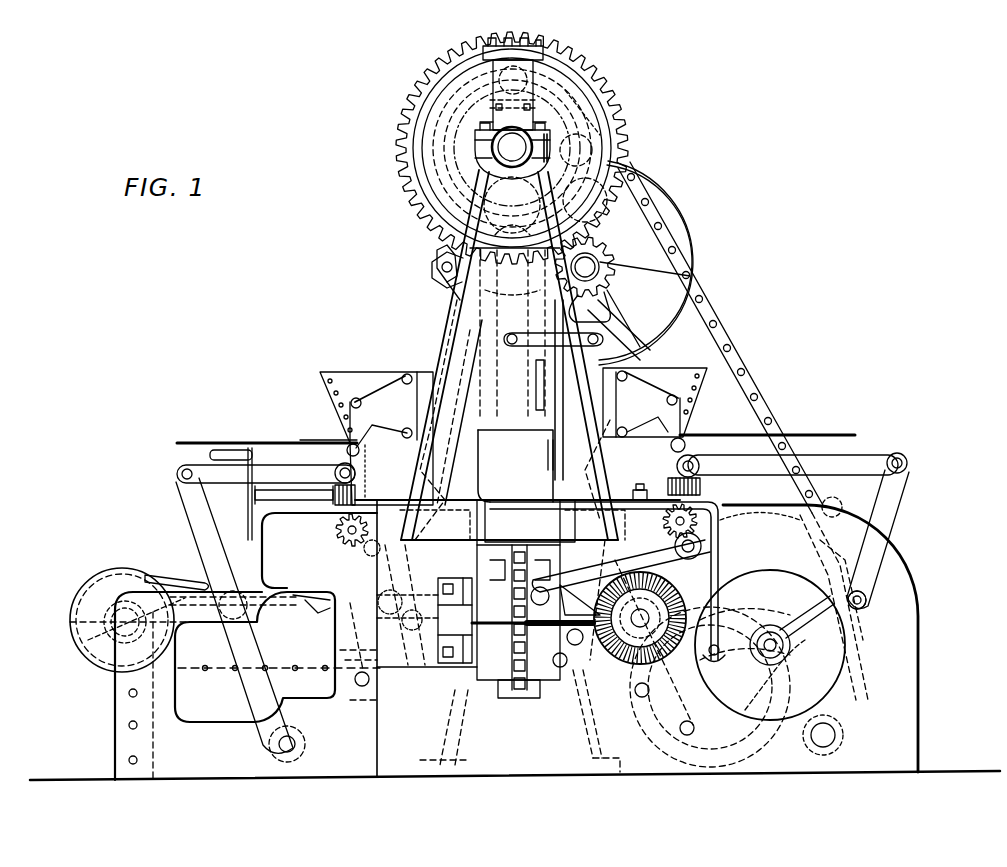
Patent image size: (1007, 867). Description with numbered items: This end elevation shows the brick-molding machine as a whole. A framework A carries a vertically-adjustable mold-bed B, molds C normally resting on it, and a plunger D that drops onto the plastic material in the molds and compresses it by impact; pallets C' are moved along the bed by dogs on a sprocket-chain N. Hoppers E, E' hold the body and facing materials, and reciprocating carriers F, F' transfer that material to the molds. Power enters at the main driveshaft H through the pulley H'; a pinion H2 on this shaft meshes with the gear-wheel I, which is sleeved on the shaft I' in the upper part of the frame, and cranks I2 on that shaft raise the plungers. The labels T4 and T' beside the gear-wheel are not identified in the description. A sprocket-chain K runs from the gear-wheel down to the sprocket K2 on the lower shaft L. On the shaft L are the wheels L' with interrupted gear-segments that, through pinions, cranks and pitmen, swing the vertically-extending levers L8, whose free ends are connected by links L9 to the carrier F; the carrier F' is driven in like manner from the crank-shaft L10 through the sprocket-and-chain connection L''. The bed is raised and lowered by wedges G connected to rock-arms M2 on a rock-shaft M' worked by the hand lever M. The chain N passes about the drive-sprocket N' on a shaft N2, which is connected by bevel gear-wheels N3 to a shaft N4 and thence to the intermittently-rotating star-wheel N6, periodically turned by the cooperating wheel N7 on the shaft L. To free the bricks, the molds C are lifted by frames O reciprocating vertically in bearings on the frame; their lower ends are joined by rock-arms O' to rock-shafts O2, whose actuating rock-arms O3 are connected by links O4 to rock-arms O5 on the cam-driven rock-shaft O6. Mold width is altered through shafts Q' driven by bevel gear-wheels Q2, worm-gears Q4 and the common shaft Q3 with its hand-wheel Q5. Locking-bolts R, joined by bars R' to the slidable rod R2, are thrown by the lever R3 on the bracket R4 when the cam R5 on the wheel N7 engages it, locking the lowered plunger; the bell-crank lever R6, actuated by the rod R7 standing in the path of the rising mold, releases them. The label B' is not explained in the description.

The gear-wheel I is at (513, 148).
The crank-shaft I' is at (474, 124).
The cranks I2 is at (534, 52).
The pinion T4 is at (596, 110).
The pinion T' is at (614, 156).
The main driveshaft H is at (644, 274).
The pulley H' is at (655, 259).
The pinion H2 is at (618, 245).
The framework A is at (455, 258).
The locking-bolts R is at (458, 304).
The bars R' is at (583, 318).
The slidable rod R2 is at (600, 346).
The lever R3 is at (556, 482).
The bracket R4 is at (640, 500).
The cam R5 is at (806, 622).
The bell-crank lever R6 is at (540, 402).
The vertically-slidable rod R7 is at (548, 466).
The lever M is at (439, 412).
The rock-shaft M' is at (356, 701).
The rock-arms M2 is at (342, 650).
The plunger D is at (433, 356).
The hopper E is at (655, 388).
The hopper E' is at (349, 381).
The sprocket-chain K is at (748, 372).
The sprocket K2 is at (833, 504).
The molds C is at (516, 473).
The pallets C' is at (494, 476).
The carrier F is at (694, 430).
The carrier F' is at (334, 474).
The shaft L is at (782, 647).
The wheels L' is at (873, 577).
The levers L8 is at (258, 648).
The links L9 is at (542, 468).
The crank-shaft L10 is at (108, 662).
The sprocket-and-chain connection L'' is at (279, 685).
The shafts Q' is at (317, 576).
The bevel gear-wheels Q2 is at (365, 552).
The common shaft Q3 is at (300, 502).
The worm-gears Q4 is at (340, 522).
The hand-wheel Q5 is at (248, 503).
The frames O is at (496, 590).
The rock-arms O' is at (553, 690).
The rock-shafts O2 is at (574, 648).
The actuating rock-arms O3 is at (548, 592).
The links O4 is at (622, 584).
The rock-arms O5 is at (716, 525).
The rock-shaft O6 is at (700, 558).
The mold-bed B is at (539, 632).
The standard B' is at (508, 721).
The wedges G is at (416, 626).
The sprocket-chain N is at (478, 624).
The drive-sprocket N' is at (512, 700).
The shaft N2 is at (462, 636).
The bevel gear-wheels N3 is at (628, 652).
The shaft N4 is at (672, 702).
The star-wheel N6 is at (722, 740).
The cooperating wheel N7 is at (846, 646).